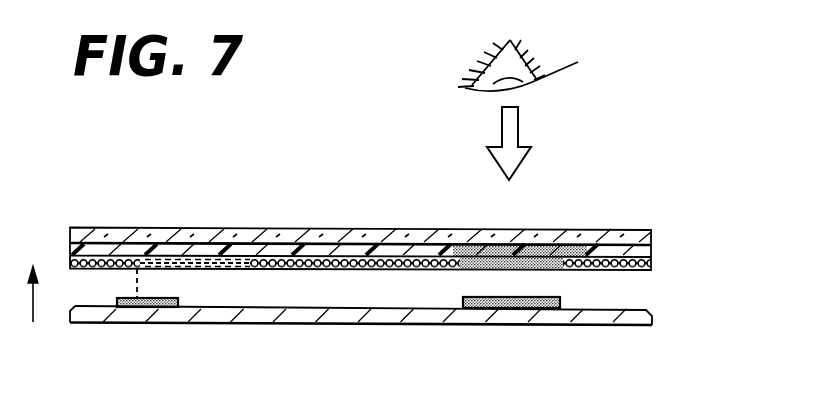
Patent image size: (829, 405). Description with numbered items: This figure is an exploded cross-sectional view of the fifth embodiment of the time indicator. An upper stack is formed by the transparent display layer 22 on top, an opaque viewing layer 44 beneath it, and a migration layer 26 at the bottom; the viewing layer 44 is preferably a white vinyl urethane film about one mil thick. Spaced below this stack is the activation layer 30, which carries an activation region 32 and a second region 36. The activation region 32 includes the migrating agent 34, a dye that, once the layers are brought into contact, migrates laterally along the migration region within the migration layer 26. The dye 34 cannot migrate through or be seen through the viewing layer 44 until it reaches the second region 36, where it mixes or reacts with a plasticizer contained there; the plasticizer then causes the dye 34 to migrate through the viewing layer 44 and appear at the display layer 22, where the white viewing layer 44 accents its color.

The display layer 22 is at (630, 230).
The opaque viewing layer 44 is at (652, 248).
The migration layer 26 is at (652, 262).
The activation region 32 is at (129, 298).
The migrating agent 34 is at (182, 269).
The second region 36 is at (560, 298).
The activation layer 30 is at (592, 325).